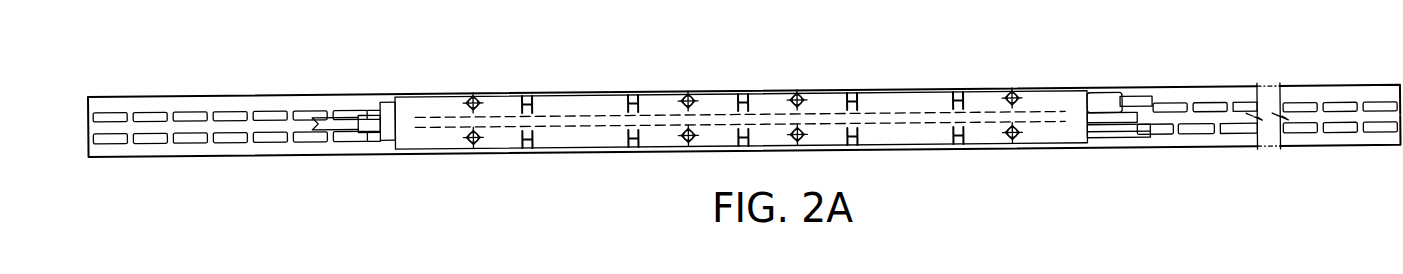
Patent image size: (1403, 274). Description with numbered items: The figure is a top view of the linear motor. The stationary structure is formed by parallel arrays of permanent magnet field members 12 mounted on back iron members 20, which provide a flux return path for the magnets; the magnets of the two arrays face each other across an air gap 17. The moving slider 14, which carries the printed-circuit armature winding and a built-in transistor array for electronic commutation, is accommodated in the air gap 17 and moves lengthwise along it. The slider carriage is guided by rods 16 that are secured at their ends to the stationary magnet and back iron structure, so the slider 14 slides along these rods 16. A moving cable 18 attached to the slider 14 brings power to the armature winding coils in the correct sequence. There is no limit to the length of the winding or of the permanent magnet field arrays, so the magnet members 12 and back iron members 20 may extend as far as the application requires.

The permanent magnet field members 12 is at (1163, 105).
The slider 14 is at (754, 76).
The rods 16 is at (1136, 97).
The air gap 17 is at (1200, 118).
The moving cable 18 is at (1105, 107).
The back iron members 20 is at (235, 107).